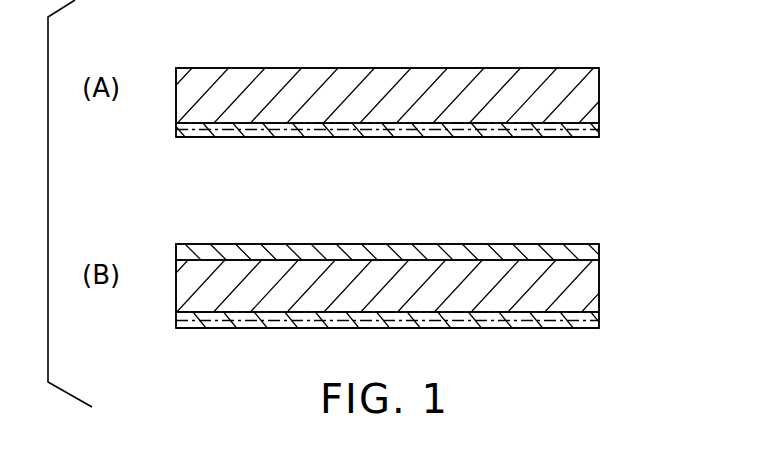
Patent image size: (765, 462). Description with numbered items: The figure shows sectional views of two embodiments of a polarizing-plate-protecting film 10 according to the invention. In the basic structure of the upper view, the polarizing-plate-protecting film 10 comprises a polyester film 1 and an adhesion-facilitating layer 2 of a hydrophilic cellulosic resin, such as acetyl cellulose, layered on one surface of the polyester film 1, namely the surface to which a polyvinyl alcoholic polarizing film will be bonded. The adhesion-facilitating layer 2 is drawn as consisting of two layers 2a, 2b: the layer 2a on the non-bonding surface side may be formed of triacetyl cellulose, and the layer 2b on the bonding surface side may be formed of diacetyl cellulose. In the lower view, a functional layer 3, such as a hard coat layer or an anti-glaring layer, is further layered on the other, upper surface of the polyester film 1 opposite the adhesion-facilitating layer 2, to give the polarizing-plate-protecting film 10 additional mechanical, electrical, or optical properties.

The polarizing-plate-protecting film 10 is at (597, 58).
The polyester film 1 is at (593, 95).
The adhesion-facilitating layer 2 is at (664, 104).
The layer on the non-bonding surface side 2a is at (595, 125).
The layer on the bonding surface side 2b is at (598, 137).
The functional layer 3 is at (598, 250).